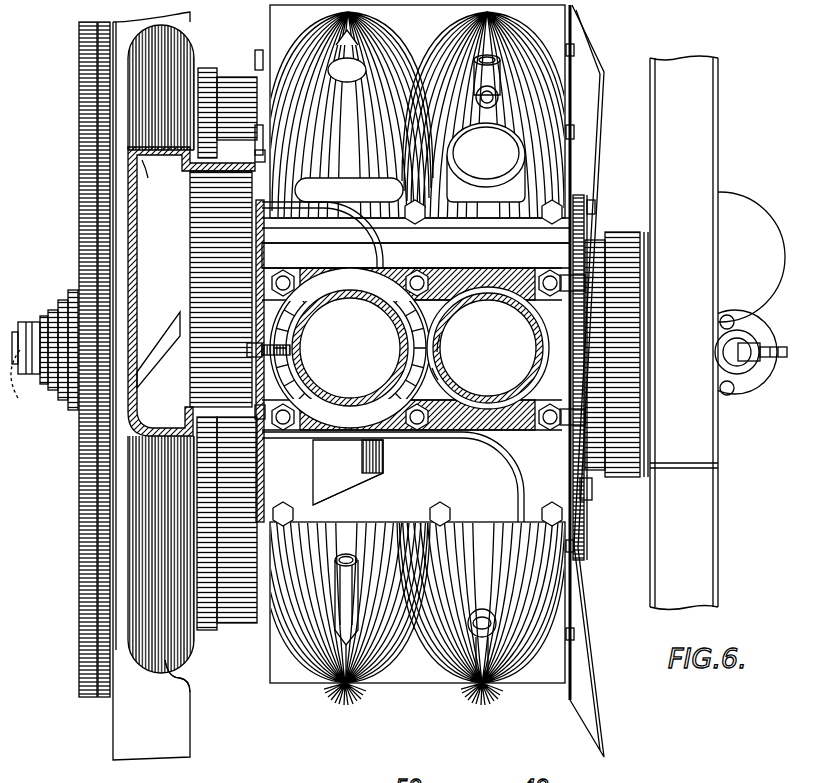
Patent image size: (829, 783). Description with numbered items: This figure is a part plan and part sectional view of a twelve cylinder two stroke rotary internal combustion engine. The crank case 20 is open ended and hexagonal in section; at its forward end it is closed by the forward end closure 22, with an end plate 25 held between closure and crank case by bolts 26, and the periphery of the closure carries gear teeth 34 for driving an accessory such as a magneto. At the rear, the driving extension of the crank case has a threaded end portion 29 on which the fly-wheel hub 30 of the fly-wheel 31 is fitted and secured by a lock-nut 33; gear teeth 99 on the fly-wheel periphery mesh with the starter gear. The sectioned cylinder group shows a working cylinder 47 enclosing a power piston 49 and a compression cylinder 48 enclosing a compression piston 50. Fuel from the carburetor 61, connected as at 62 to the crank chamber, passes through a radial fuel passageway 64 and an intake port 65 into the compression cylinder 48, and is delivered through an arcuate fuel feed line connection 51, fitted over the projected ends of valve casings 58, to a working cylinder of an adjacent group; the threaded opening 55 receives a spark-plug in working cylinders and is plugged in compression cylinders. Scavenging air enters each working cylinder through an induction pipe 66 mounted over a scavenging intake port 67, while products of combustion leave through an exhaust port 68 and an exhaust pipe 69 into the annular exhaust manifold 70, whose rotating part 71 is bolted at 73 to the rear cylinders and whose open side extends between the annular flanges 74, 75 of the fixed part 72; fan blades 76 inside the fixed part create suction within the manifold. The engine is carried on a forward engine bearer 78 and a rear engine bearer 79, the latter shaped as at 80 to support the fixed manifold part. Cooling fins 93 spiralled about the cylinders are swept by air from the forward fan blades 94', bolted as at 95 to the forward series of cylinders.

The crank case 20 is at (587, 236).
The forward end closure 22 is at (586, 492).
The end plate 25 is at (574, 215).
The bolt 26 is at (610, 273).
The threaded end portion 29 is at (16, 383).
The fly-wheel hub 30 is at (55, 402).
The fly-wheel 31 is at (80, 233).
The lock-nut 33 is at (30, 322).
The gear teeth 34 is at (624, 233).
The working cylinder 47 is at (270, 372).
The compression cylinder 48 is at (272, 44).
The power piston 49 is at (350, 348).
The compression piston 50 is at (436, 352).
The fuel feed line connection 51 is at (556, 88).
The internally threaded opening 55 is at (552, 622).
The valve casing 58 is at (556, 68).
The carburetor 61 is at (727, 252).
The carburetor connection 62 is at (740, 332).
The fuel passageway 64 is at (440, 378).
The intake port 65 is at (440, 345).
The induction pipe 66 is at (419, 314).
The scavenging intake port 67 is at (362, 457).
The exhaust port 68 is at (392, 268).
The exhaust pipe 69 is at (393, 362).
The annular exhaust manifold 70 is at (161, 554).
The rotating manifold part 71 is at (236, 88).
The fixed manifold part 72 is at (161, 87).
The bolt 73 is at (246, 350).
The annular flange 74 is at (210, 74).
The annular flange 75 is at (138, 218).
The fan blade 76 is at (148, 172).
The forward engine bearer 78 is at (710, 108).
The rear engine bearer 79 is at (151, 386).
The shaped portion 80 is at (170, 682).
The cooling fin 93 is at (558, 102).
The forward fan blade 94' is at (632, 381).
The bolt 95 is at (595, 356).
The gear teeth 99 is at (80, 620).